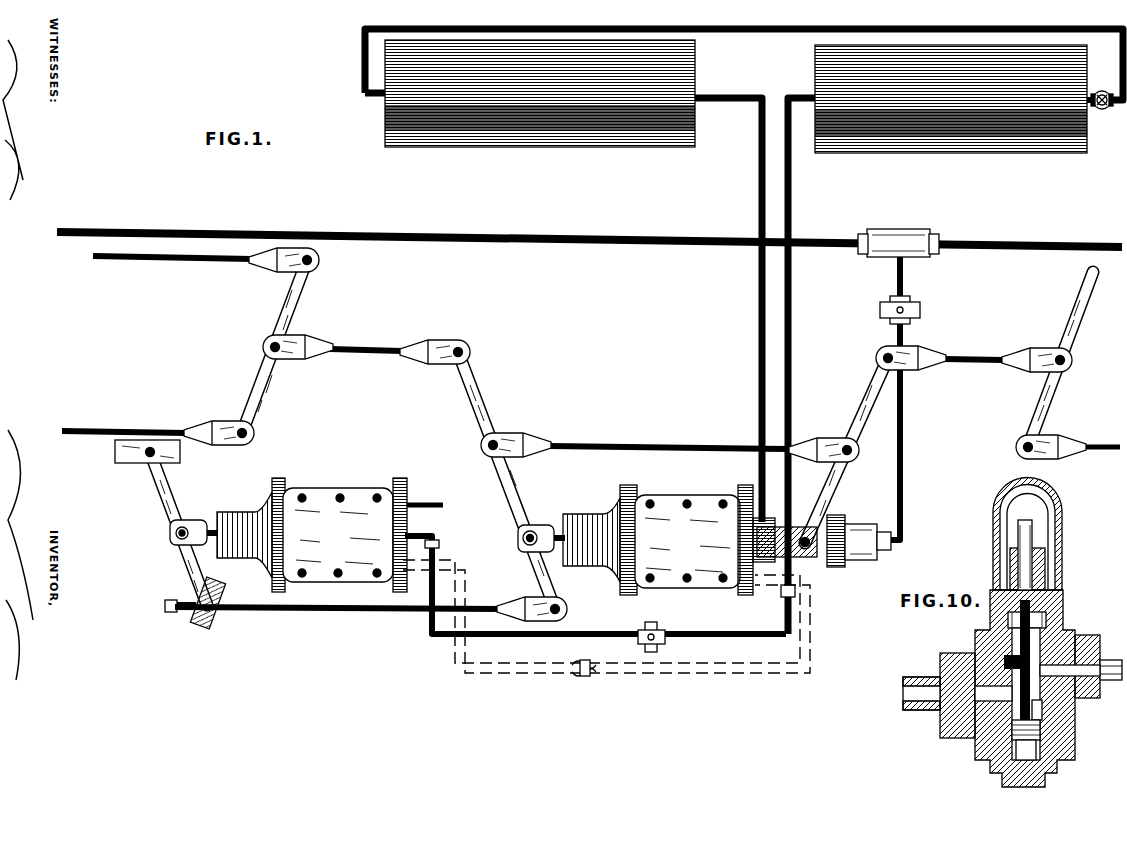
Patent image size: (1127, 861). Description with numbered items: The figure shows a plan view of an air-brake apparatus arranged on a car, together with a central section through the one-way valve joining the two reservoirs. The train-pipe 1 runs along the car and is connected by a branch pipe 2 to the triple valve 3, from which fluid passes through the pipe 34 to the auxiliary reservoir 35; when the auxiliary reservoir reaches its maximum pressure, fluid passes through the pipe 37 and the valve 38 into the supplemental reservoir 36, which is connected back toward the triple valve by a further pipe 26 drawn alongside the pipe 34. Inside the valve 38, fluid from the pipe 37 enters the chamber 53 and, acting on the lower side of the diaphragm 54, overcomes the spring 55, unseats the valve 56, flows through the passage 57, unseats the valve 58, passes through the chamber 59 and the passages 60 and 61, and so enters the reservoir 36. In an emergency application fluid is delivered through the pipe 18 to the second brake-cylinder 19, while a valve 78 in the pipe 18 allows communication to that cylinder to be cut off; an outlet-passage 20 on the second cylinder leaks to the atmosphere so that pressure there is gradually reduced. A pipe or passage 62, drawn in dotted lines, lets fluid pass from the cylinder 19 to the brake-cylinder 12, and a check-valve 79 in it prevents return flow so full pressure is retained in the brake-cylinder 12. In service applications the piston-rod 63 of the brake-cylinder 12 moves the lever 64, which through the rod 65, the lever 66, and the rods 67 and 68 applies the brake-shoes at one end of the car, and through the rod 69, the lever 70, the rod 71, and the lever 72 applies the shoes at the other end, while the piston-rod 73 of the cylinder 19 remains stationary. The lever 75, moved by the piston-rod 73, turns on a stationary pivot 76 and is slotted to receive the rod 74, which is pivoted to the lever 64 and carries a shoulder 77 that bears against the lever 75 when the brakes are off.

In FIG. 1, the train-pipe 1 is at (589, 230).
In FIG. 1, the branch pipe 2 is at (904, 420).
In FIG. 1, the triple valve 3 is at (850, 566).
In FIG. 1, the brake-cylinder 12 is at (658, 540).
In FIG. 1, the pipe 18 is at (708, 640).
In FIG. 1, the second brake-cylinder 19 is at (312, 535).
In FIG. 1, the outlet-passage 20 is at (428, 502).
In FIG. 1, the pipe from tank 36 26 is at (788, 330).
In FIG. 1, the pipe 34 is at (762, 325).
In FIG. 1, the auxiliary reservoir 35 is at (540, 93).
In FIG. 1, the supplemental reservoir 36 is at (951, 99).
In FIG. 1, the pipe 37 is at (744, 51).
In FIG. 10, the pipe 37 is at (1110, 682).
In FIG. 1, the valve 38 is at (1104, 109).
In FIG. 10, the valve 38 is at (1070, 615).
In FIG. 10, the chamber 53 is at (1040, 680).
In FIG. 10, the diaphragm 54 is at (1046, 622).
In FIG. 10, the spring 55 is at (1048, 590).
In FIG. 10, the valve 56 is at (1004, 676).
In FIG. 10, the passage 57 is at (1042, 706).
In FIG. 10, the valve 58 is at (1040, 730).
In FIG. 10, the chamber 59 is at (1036, 750).
In FIG. 10, the passage 60 is at (976, 695).
In FIG. 10, the passage 61 is at (928, 693).
In FIG. 1, the pipe or passage 62 is at (606, 630).
In FIG. 1, the piston-rod 63 is at (545, 520).
In FIG. 1, the lever 64 is at (508, 500).
In FIG. 1, the rod 65 is at (366, 356).
In FIG. 1, the lever 66 is at (272, 399).
In FIG. 1, the rod 67 is at (206, 268).
In FIG. 1, the rod 68 is at (158, 422).
In FIG. 1, the rod 69 is at (670, 440).
In FIG. 1, the lever 70 is at (855, 418).
In FIG. 1, the rod 71 is at (974, 366).
In FIG. 1, the lever 72 is at (1045, 395).
In FIG. 1, the piston-rod 73 is at (205, 515).
In FIG. 1, the rod 74 is at (371, 618).
In FIG. 1, the lever 75 is at (168, 518).
In FIG. 1, the stationary pivot 76 is at (143, 465).
In FIG. 1, the shoulder 77 is at (188, 620).
In FIG. 1, the valve 78 is at (637, 627).
In FIG. 1, the check-valve 79 is at (586, 676).